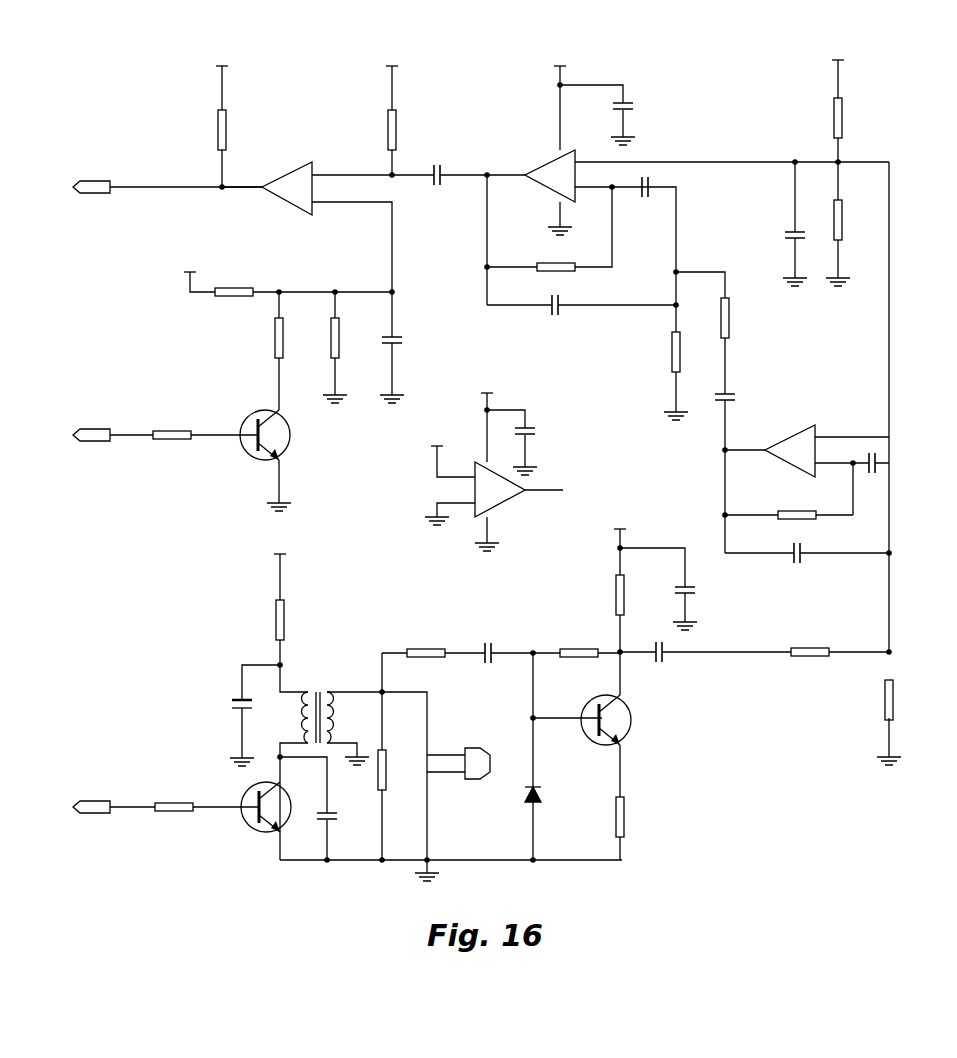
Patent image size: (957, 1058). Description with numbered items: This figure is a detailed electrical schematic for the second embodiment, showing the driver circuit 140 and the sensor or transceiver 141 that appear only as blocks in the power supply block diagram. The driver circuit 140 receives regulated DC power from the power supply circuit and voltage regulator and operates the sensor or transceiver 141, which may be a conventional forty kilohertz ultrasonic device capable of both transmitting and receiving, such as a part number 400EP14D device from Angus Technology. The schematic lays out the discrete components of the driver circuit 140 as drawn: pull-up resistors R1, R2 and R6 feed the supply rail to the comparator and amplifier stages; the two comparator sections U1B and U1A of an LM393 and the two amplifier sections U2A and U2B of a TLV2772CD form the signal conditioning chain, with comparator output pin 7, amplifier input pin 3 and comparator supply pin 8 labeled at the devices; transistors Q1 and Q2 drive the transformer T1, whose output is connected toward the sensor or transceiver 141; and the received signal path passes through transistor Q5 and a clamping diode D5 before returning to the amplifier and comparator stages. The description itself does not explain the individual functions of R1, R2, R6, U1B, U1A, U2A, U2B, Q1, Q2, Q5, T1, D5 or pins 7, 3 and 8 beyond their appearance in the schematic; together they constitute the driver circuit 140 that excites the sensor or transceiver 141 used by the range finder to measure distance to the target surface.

The driver circuit 140 is at (166, 599).
The sensor or transceiver 141 is at (487, 738).
The resistor R1 10K R1 is at (230, 120).
The resistor R2 10K R2 is at (400, 114).
The resistor R6 10K R6 is at (846, 104).
The comparator U1B LM393 U1B is at (277, 184).
The comparator U1A LM393 U1A is at (508, 465).
The op-amp U2A TLV2772CD U2A is at (534, 144).
The op-amp U2B TLV2772CD U2B is at (790, 446).
The transistor Q1 is at (279, 460).
The transistor Q2 is at (280, 806).
The transistor Q5 is at (620, 719).
The transformer T1 is at (316, 701).
The diode D5 1N4148 D5 is at (554, 787).
The comparator output pin 7 is at (242, 180).
The op-amp non-inverting input pin 3 is at (732, 155).
The comparator supply pin 8 is at (482, 436).